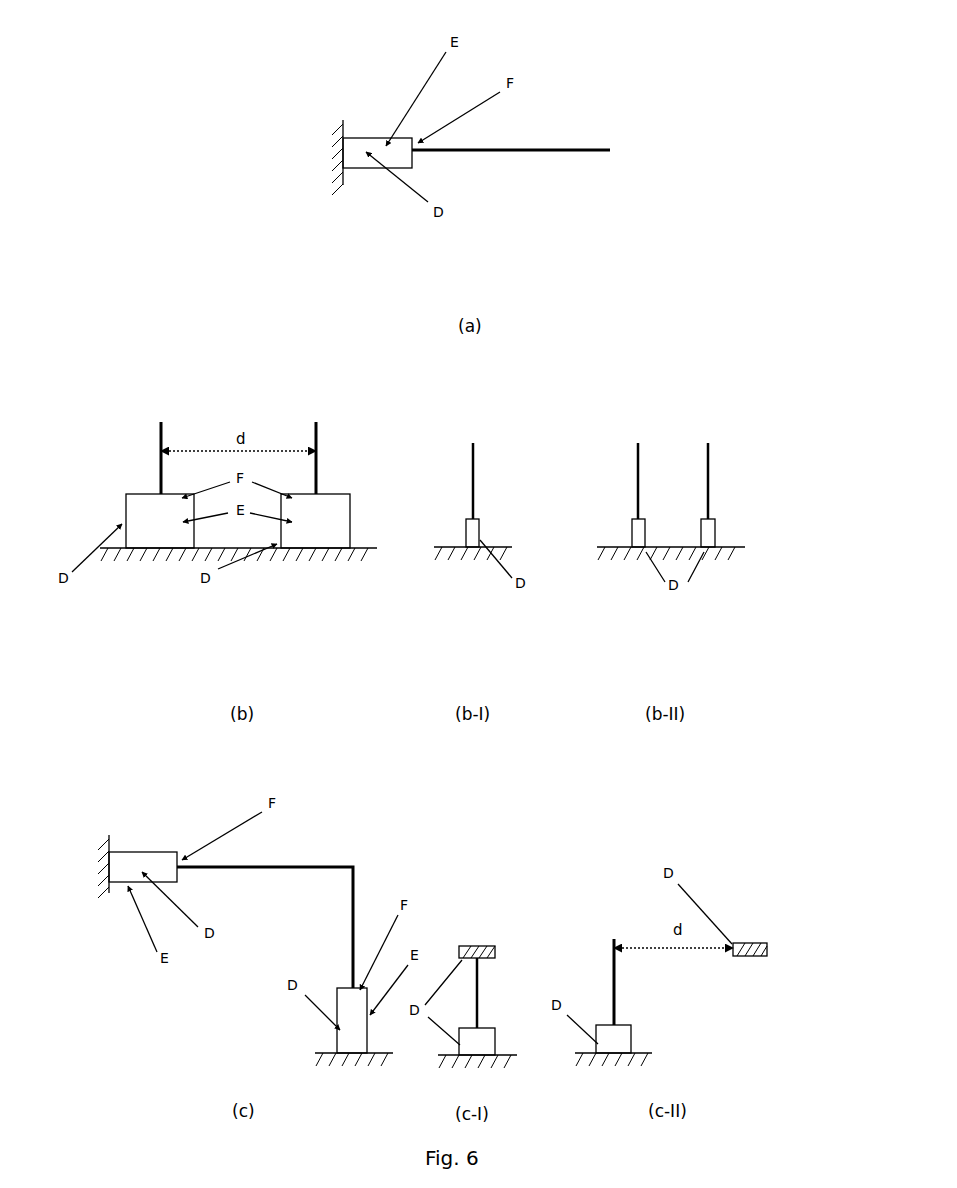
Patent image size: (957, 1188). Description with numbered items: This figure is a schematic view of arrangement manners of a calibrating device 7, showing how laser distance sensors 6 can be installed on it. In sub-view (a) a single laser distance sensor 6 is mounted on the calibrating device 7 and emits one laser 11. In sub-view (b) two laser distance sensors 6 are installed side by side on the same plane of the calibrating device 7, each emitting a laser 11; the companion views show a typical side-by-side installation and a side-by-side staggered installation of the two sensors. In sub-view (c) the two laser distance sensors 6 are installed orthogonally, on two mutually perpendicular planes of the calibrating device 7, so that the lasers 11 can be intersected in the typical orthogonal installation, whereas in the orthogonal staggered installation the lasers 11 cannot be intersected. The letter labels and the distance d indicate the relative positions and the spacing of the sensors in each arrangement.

The laser distance sensor 6 is at (388, 140).
The calibrating device 7 is at (342, 180).
The laser 11 is at (485, 156).